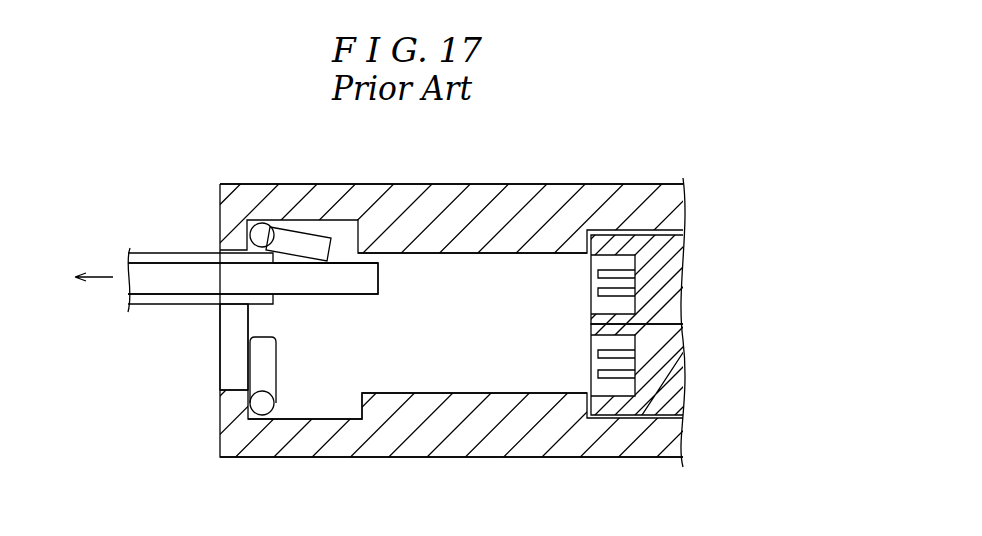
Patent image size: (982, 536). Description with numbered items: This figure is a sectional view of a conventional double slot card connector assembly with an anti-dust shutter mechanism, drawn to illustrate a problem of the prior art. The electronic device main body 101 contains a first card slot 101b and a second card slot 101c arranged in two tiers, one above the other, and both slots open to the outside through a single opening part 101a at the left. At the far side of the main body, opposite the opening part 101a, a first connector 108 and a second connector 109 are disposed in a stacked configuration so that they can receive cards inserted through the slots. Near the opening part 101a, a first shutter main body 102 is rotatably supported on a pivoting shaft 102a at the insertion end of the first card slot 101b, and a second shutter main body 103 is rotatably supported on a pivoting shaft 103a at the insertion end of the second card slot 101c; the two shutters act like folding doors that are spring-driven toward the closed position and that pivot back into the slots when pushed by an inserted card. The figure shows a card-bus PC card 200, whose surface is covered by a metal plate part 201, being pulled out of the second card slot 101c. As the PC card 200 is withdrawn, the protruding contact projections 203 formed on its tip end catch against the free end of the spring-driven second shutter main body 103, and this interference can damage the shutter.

The electronic device main body 101 is at (473, 192).
The opening part 101a is at (228, 330).
The first card slot 101b is at (513, 366).
The second card slot 101c is at (528, 285).
The first shutter main body 102 is at (253, 365).
The pivoting shaft 102a is at (258, 404).
The second shutter main body 103 is at (295, 237).
The pivoting shaft 103a is at (262, 235).
The first connector 108 is at (675, 363).
The second connector 109 is at (672, 276).
The PC card 200 is at (165, 250).
The metal plate part 201 is at (137, 283).
The contact projections 203 is at (330, 260).